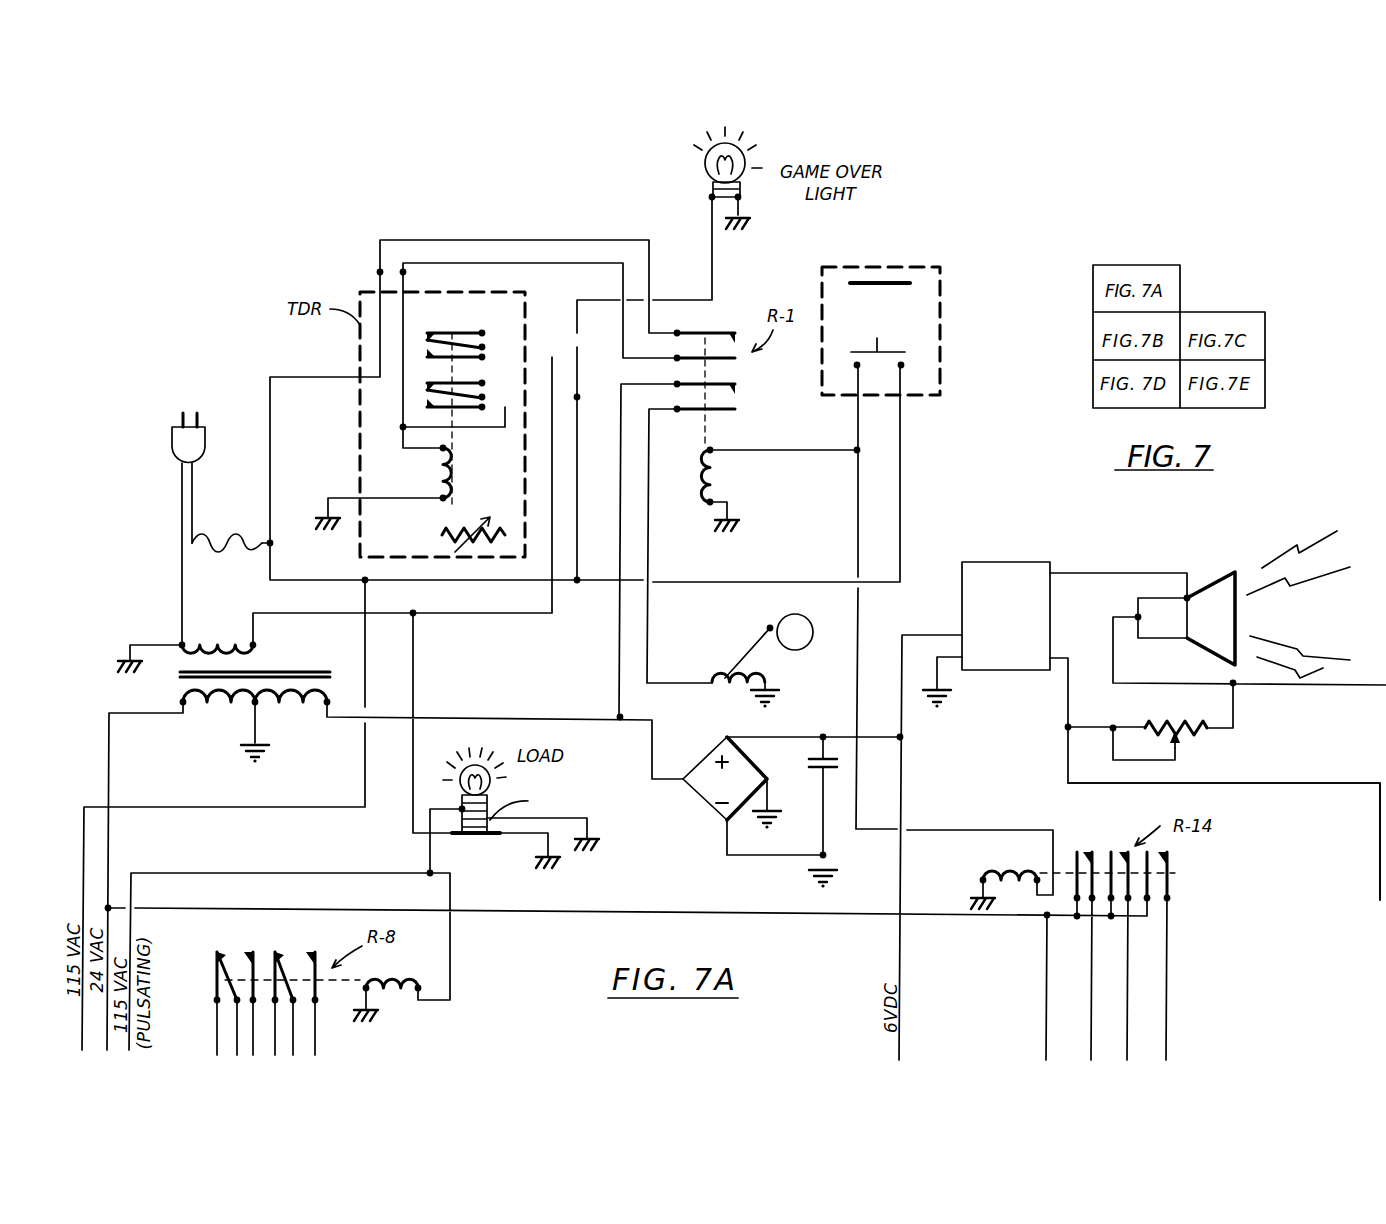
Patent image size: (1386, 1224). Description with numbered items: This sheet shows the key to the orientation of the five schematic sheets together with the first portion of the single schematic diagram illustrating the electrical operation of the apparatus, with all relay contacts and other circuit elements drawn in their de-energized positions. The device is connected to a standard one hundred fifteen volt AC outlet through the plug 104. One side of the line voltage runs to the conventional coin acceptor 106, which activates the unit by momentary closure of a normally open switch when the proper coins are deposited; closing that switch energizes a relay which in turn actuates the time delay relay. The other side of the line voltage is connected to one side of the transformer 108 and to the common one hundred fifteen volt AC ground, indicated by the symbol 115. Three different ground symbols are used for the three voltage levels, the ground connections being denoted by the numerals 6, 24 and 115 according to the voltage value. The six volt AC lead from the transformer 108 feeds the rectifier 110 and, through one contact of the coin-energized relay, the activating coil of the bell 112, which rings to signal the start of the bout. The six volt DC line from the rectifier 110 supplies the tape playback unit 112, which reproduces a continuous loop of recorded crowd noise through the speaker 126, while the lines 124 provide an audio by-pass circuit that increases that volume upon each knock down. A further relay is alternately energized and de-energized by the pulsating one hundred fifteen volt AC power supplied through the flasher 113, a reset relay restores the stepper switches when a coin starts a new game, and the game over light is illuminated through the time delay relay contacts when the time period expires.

The plug 104 is at (172, 443).
The coin acceptor 106 is at (943, 327).
The transformer 108 is at (278, 651).
The rectifier 110 is at (706, 798).
The bell / playback unit 112 is at (785, 665).
The flasher 113 is at (490, 838).
The 115v AC ground 115 is at (321, 500).
The lines 124 is at (1380, 893).
The speaker 126 is at (1213, 583).
The 6v ground 6 is at (750, 690).
The 24v ground 24 is at (268, 742).